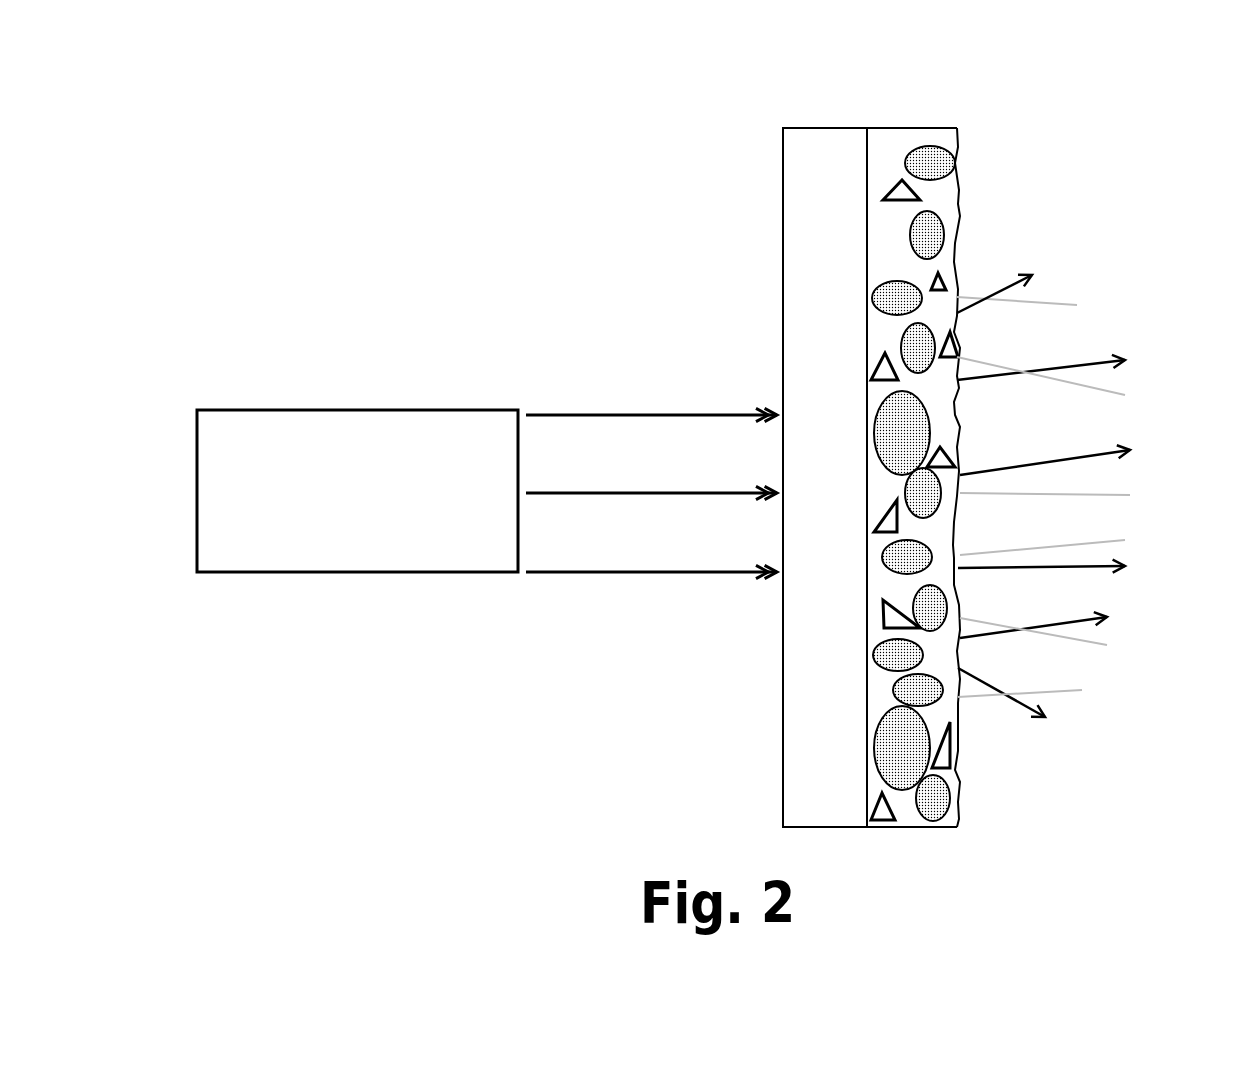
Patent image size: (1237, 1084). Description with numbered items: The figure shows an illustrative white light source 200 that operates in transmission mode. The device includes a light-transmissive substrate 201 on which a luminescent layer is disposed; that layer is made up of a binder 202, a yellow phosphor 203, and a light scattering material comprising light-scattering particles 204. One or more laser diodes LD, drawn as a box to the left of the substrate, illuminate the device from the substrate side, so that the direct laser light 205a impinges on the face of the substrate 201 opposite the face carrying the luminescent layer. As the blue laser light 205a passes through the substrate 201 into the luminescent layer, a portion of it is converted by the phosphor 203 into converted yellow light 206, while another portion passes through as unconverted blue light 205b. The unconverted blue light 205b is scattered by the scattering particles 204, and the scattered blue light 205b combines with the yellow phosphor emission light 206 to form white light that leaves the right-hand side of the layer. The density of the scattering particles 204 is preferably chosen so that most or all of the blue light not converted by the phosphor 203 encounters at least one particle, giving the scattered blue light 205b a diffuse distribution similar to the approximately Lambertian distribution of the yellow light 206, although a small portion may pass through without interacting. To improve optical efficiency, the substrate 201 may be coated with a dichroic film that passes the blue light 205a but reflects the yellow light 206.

The white light source 200 is at (652, 228).
The laser diodes LD is at (355, 408).
The light-transmissive substrate 201 is at (828, 222).
The binder 202 is at (885, 140).
The yellow phosphor 203 is at (933, 163).
The light-scattering particles 204 is at (948, 737).
The laser light 205a is at (725, 572).
The unconverted blue light 205b is at (1080, 568).
The converted yellow light 206 is at (1030, 298).